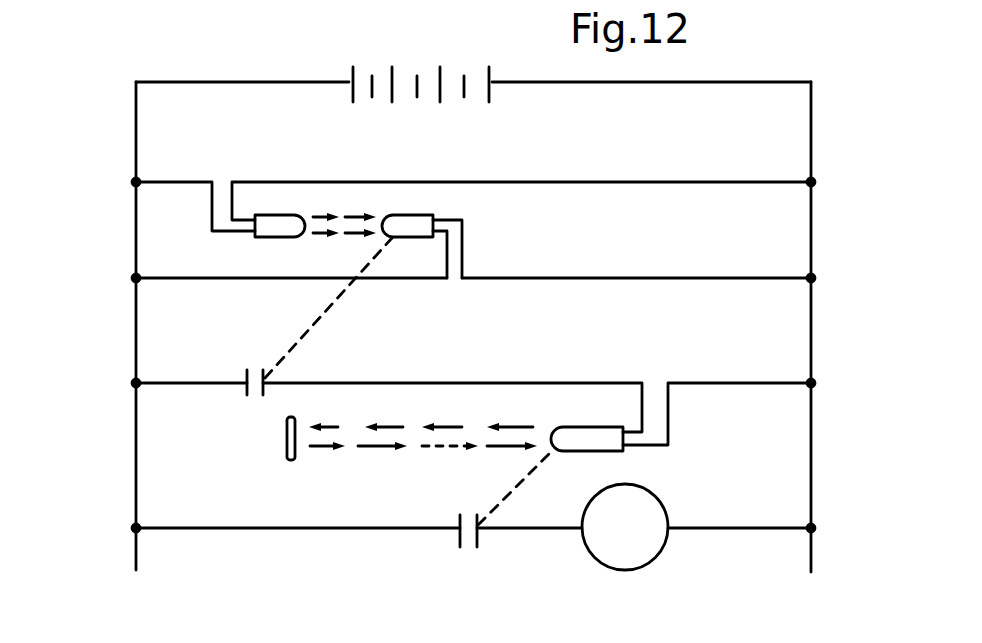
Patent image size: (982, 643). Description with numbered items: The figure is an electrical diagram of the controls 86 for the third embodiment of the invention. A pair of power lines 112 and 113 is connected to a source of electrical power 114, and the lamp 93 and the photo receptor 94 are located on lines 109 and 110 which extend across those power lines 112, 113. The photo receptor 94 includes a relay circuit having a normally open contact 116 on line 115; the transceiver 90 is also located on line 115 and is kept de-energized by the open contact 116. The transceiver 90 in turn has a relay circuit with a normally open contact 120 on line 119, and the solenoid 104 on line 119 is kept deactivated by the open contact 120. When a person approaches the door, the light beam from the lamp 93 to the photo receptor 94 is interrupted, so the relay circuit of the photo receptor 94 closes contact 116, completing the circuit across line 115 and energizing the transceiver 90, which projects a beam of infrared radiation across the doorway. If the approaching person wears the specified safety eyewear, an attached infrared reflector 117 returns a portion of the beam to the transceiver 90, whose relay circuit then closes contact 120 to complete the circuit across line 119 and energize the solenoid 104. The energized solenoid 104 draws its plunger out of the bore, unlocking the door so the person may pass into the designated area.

The detection circuit 86 is at (125, 106).
The source of electrical power 114 is at (350, 80).
The lamp 93 is at (279, 223).
The photo receptor 94 is at (409, 222).
The line 109 is at (605, 181).
The line 110 is at (583, 278).
The power line 112 is at (134, 233).
The power line 113 is at (812, 221).
The line 115 is at (439, 382).
The normally open contact 116 is at (246, 381).
The infrared reflector 117 is at (287, 447).
The transceiver 90 is at (578, 440).
The line 119 is at (298, 528).
The normally open contact 120 is at (456, 525).
The solenoid 104 is at (596, 558).